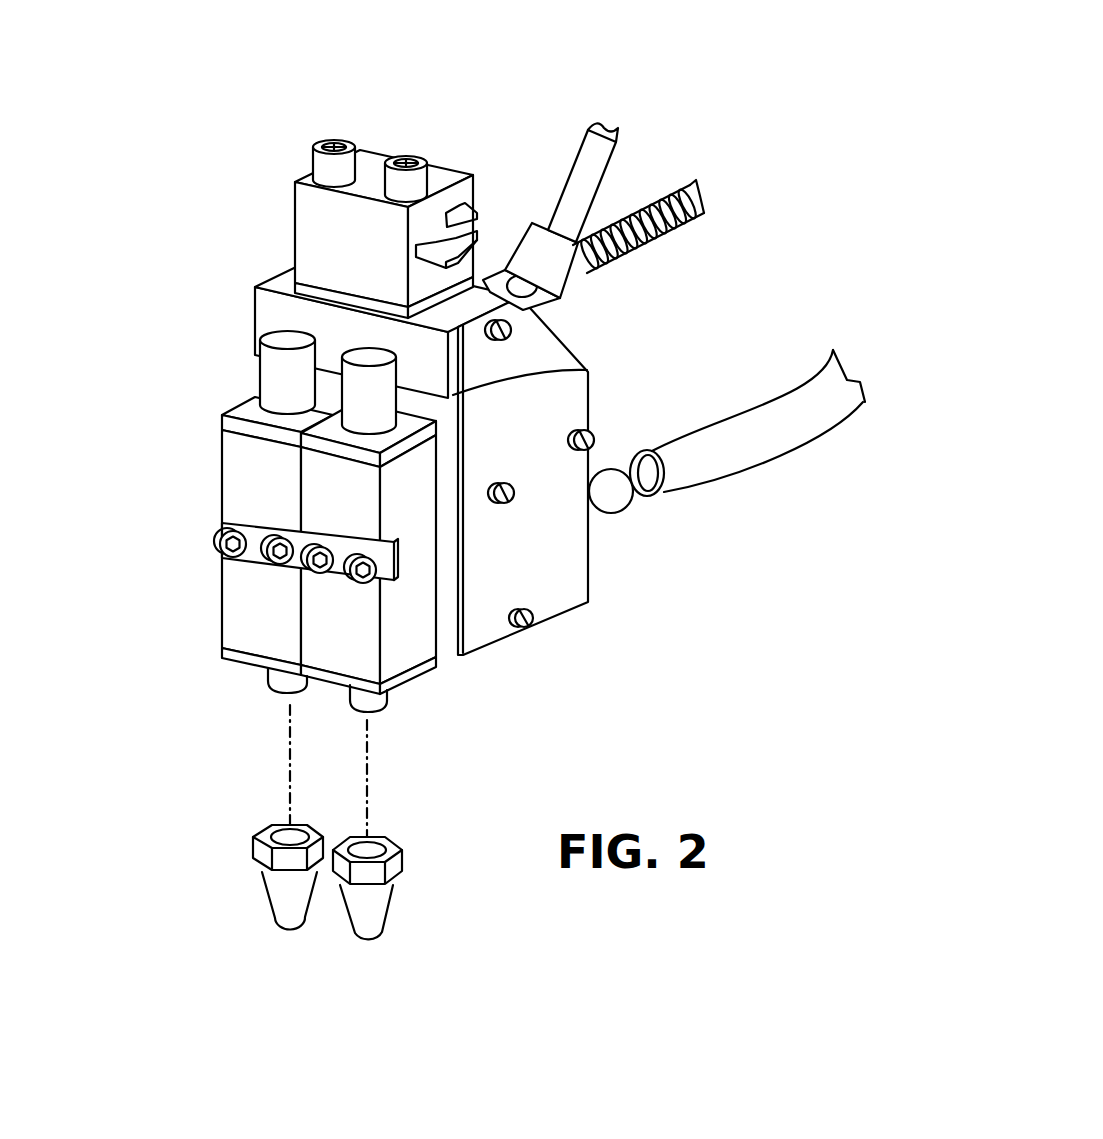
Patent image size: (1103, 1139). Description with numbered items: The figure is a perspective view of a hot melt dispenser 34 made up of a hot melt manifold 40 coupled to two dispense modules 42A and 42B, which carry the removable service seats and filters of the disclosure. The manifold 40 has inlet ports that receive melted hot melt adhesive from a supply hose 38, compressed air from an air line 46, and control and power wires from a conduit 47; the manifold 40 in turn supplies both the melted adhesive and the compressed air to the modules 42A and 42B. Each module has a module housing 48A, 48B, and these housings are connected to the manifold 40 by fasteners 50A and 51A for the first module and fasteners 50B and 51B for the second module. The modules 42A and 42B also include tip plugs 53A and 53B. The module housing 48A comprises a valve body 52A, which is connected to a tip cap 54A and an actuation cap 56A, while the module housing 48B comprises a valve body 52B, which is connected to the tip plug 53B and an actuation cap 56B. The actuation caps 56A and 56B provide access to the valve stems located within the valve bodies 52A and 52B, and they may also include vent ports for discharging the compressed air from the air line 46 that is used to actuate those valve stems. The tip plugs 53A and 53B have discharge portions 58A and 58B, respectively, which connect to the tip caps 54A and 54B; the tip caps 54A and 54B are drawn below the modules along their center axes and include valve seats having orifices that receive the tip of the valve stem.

The dispenser 34 is at (700, 133).
The supply hose 38 is at (735, 437).
The hot melt manifold 40 is at (567, 601).
The dispense module 42A is at (183, 675).
The dispense module 42B is at (412, 719).
The air line 46 is at (585, 162).
The conduit 47 is at (656, 240).
The module housing 48A is at (212, 470).
The module housing 48B is at (440, 468).
The fastener 50A is at (220, 544).
The fastener 50B is at (318, 565).
The fastener 51A is at (280, 552).
The fastener 51B is at (372, 575).
The valve body 52A is at (224, 437).
The valve body 52B is at (405, 500).
The tip plug 53A is at (243, 657).
The tip plug 53B is at (328, 673).
The tip cap 54A is at (272, 902).
The tip cap 54B is at (381, 922).
The actuation cap 56A is at (278, 378).
The actuation cap 56B is at (548, 317).
The discharge portion 58A is at (287, 697).
The discharge portion 58B is at (372, 703).